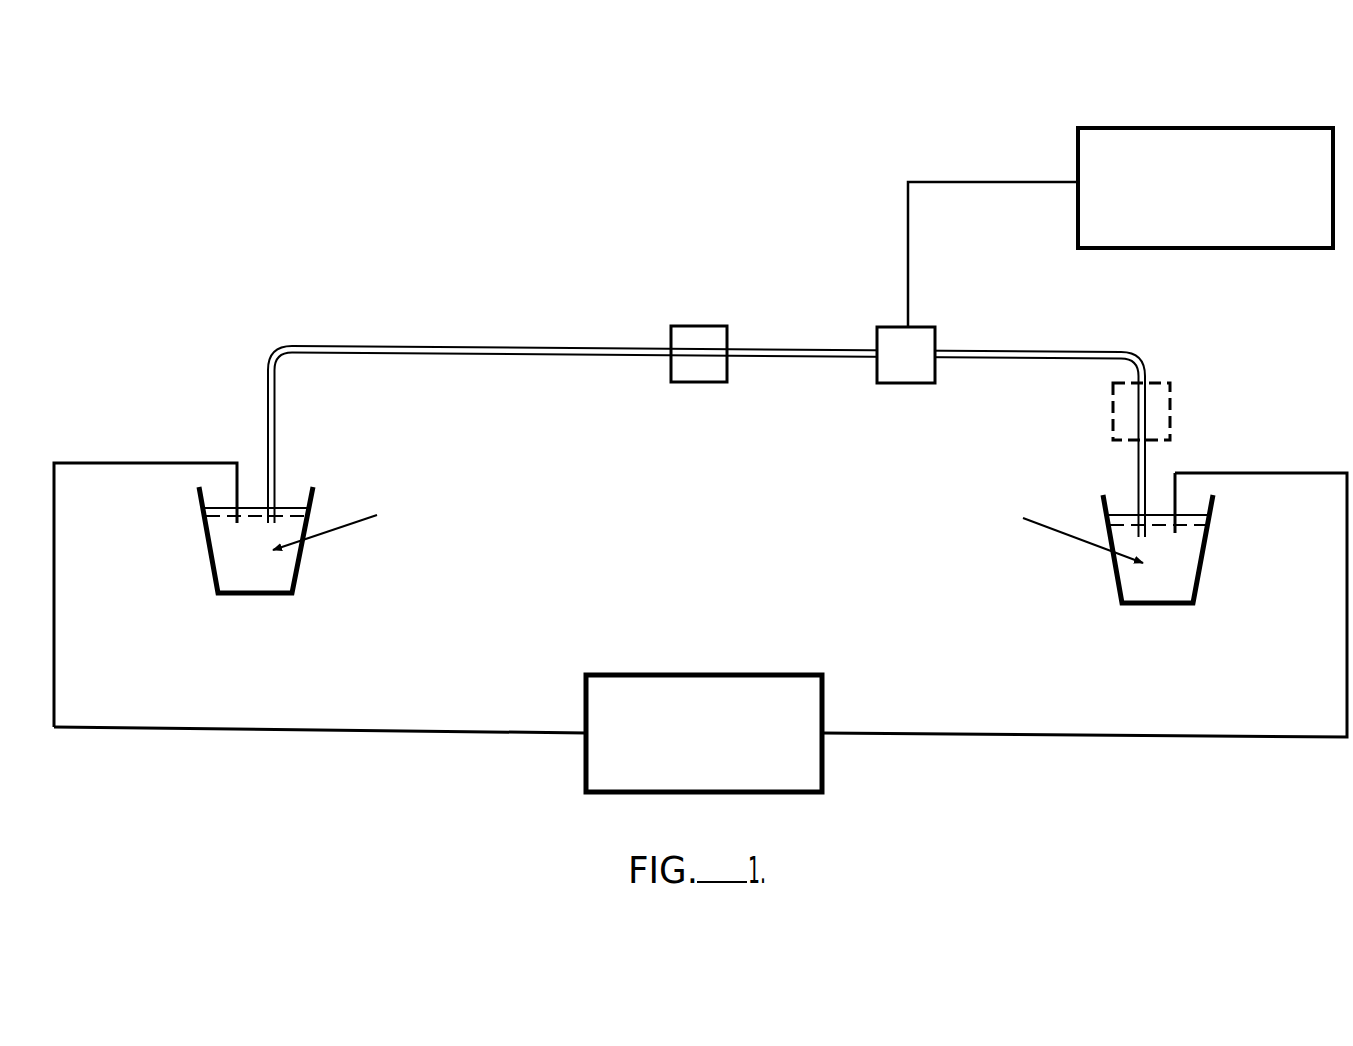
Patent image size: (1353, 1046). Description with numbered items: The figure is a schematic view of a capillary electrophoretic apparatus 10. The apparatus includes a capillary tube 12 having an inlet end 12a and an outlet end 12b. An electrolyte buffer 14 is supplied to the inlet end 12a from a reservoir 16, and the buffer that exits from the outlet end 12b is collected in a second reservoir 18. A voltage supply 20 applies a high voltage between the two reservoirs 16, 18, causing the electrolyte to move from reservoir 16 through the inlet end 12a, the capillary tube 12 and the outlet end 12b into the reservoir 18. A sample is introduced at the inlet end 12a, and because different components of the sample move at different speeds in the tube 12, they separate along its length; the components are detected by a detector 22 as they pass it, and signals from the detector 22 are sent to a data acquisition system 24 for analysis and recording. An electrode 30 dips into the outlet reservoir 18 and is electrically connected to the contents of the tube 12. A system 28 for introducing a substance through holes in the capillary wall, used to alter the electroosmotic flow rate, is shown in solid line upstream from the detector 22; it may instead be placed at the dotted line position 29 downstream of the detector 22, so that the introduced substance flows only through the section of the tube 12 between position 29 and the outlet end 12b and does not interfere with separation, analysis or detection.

The apparatus 10 is at (268, 135).
The capillary tube 12 is at (523, 347).
The inlet end 12a is at (267, 523).
The outlet end 12b is at (1150, 533).
The electrolyte buffer 14 is at (282, 570).
The reservoir 16 is at (297, 588).
The reservoir 18 is at (1117, 592).
The voltage supply 20 is at (695, 675).
The detector 22 is at (905, 383).
The data acquisition system 24 is at (1223, 128).
The system 28 is at (698, 326).
The dotted line position 29 is at (1170, 417).
The electrode 30 is at (1177, 490).